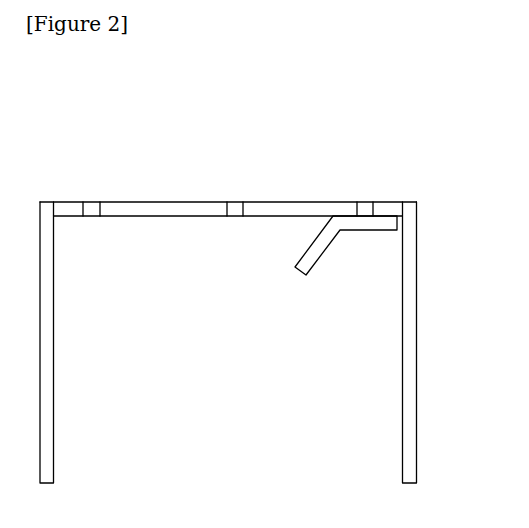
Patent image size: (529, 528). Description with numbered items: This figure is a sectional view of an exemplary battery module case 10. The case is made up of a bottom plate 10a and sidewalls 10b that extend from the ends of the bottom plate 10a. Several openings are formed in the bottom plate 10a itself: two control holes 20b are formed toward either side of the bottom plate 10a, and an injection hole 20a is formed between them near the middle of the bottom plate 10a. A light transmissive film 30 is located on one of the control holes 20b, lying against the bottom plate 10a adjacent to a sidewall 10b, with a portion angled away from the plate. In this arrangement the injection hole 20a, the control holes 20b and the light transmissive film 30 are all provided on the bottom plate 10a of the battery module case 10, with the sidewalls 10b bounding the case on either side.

The battery module case 10 is at (418, 130).
The bottom plate 10a is at (150, 207).
The sidewalls 10b is at (410, 325).
The injection hole 20a is at (235, 207).
The control holes 20b is at (92, 207).
The light transmissive film 30 is at (398, 219).